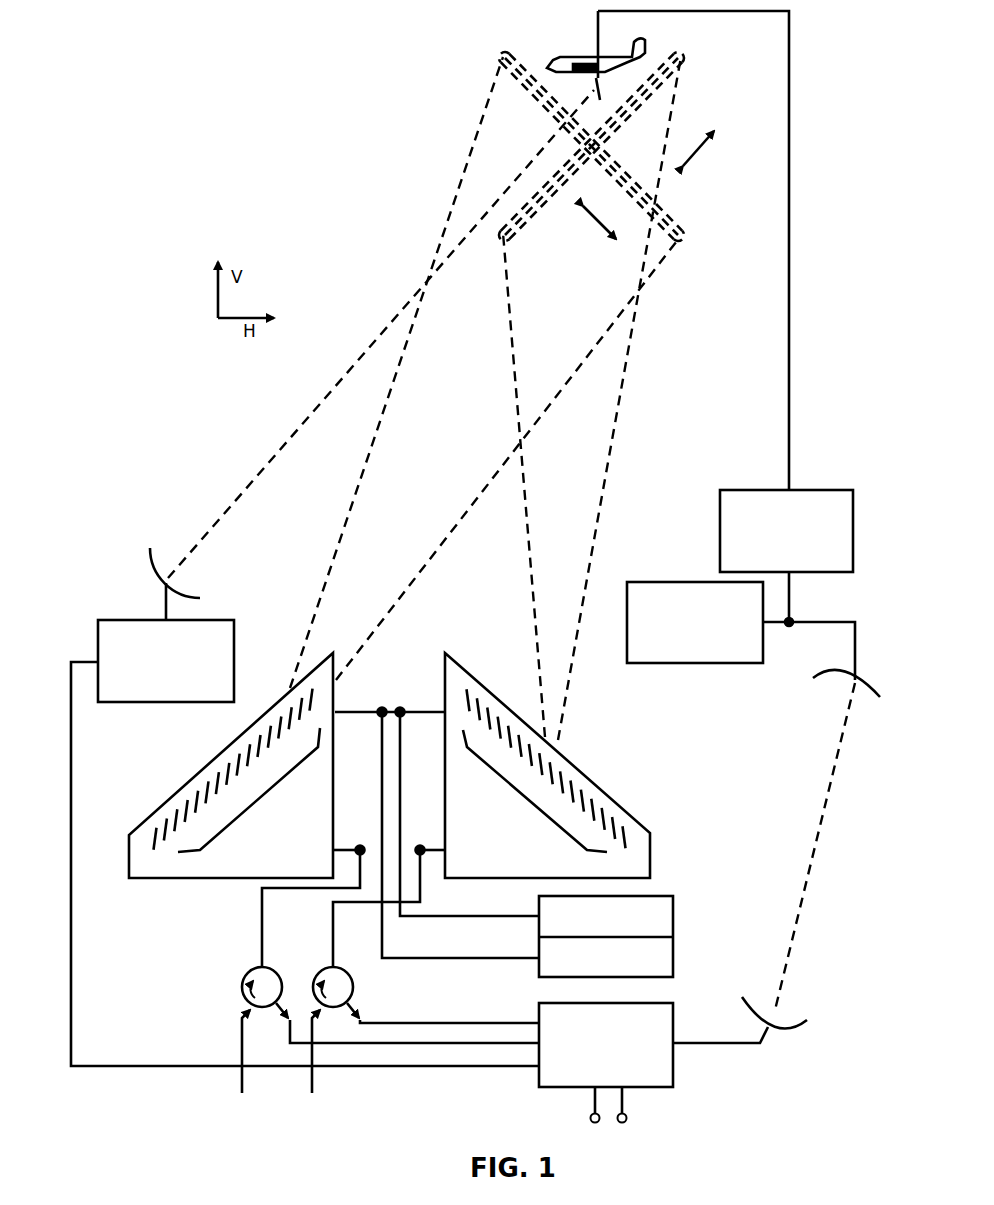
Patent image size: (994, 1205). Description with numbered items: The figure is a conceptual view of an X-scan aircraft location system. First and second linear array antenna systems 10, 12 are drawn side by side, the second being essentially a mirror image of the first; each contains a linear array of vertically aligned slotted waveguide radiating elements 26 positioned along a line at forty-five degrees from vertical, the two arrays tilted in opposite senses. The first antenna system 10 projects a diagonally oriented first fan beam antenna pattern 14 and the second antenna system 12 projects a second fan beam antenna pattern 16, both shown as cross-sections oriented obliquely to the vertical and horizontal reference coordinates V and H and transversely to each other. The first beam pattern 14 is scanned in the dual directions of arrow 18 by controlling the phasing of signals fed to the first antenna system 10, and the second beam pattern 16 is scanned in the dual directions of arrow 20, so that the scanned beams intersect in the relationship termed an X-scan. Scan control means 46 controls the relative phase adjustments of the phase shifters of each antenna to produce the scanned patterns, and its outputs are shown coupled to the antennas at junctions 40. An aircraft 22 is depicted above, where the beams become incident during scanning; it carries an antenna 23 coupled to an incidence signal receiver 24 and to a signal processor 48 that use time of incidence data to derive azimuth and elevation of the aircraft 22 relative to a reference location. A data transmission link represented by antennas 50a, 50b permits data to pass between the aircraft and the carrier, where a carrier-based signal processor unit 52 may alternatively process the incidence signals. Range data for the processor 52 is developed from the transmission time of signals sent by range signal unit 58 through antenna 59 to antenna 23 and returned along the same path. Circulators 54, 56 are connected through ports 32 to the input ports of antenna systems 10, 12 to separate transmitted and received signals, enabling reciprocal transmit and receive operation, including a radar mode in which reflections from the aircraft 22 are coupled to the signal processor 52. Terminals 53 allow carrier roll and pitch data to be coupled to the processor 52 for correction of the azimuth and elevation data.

The first linear array antenna system 10 is at (187, 783).
The second linear array antenna system 12 is at (588, 779).
The first fan beam antenna pattern 14 is at (672, 217).
The second fan beam antenna pattern 16 is at (522, 230).
The arrow 18 is at (700, 150).
The arrow 20 is at (602, 226).
The aircraft 22 is at (558, 58).
The antenna 23 is at (597, 100).
The incidence signal receiver 24 is at (757, 490).
The slotted waveguide radiating elements 26 is at (262, 796).
The antenna port connection 32 is at (360, 847).
The scan control input 40 is at (391, 694).
The scan control means 46 is at (675, 916).
The signal processor 48 is at (667, 581).
The antenna 50a is at (868, 680).
The antenna 50b is at (793, 1027).
The signal processor unit 52 is at (675, 1016).
The terminals 53 is at (600, 1121).
The circulator 54 is at (272, 971).
The circulator 56 is at (353, 987).
The range signal unit 58 is at (234, 647).
The antenna 59 is at (155, 563).